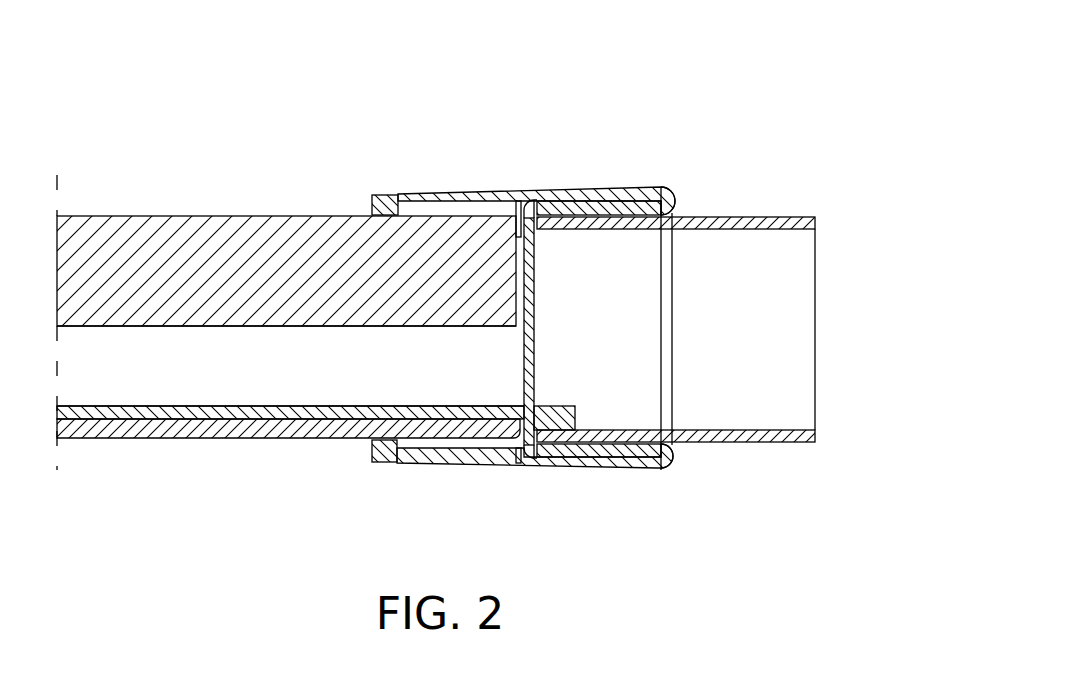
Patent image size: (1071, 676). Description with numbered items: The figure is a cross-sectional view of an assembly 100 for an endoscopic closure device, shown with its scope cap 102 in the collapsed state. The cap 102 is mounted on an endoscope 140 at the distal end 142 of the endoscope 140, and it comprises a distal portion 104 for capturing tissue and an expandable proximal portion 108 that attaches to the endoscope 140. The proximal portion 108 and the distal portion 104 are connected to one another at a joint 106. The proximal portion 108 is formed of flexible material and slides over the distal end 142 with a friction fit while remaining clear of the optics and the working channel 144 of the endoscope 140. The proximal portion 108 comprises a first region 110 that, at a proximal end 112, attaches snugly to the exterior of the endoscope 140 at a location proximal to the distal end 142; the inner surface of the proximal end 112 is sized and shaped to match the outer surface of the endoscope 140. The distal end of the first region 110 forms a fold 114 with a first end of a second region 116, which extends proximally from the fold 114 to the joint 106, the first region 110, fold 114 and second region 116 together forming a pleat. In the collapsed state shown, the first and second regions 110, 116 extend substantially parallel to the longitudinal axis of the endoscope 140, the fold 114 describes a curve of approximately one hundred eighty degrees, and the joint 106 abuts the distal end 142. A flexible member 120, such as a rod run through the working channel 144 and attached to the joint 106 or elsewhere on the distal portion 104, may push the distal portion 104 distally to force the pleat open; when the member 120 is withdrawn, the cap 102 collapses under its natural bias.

The assembly 100 is at (494, 288).
The scope cap 102 is at (539, 308).
The distal portion 104 is at (778, 310).
The joint 106 is at (532, 236).
The proximal portion 108 is at (433, 152).
The first region 110 is at (583, 186).
The proximal end 112 is at (380, 199).
The fold 114 is at (670, 194).
The second region 116 is at (614, 208).
The flexible member 120 is at (565, 430).
The endoscope 140 is at (225, 200).
The distal end 142 is at (520, 348).
The working channel 144 is at (208, 392).